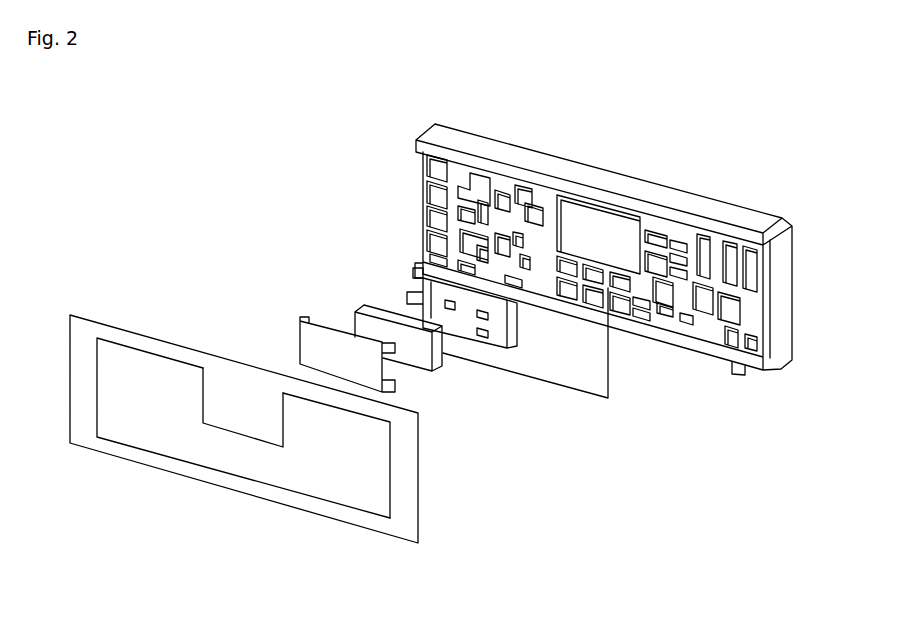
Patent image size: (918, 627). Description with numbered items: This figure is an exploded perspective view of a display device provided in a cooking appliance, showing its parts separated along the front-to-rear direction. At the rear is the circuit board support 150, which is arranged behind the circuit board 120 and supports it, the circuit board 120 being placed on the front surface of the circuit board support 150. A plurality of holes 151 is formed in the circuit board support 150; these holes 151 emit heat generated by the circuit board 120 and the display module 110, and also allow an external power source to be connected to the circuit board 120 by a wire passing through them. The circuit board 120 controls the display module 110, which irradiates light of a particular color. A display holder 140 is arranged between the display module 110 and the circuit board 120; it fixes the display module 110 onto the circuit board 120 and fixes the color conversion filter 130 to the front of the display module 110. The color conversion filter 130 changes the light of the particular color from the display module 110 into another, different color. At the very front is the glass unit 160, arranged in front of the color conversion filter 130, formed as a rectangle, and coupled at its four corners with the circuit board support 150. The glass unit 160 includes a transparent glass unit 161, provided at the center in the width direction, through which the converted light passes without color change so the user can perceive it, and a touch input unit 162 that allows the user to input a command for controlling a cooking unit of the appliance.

The display module 110 is at (362, 323).
The circuit board 120 is at (583, 375).
The color conversion filter 130 is at (372, 367).
The display holder 140 is at (423, 274).
The circuit board support 150 is at (452, 138).
The holes 151 is at (647, 230).
The glass unit 160 is at (87, 330).
The transparent glass unit 161 is at (226, 386).
The touch input unit 162 is at (320, 462).